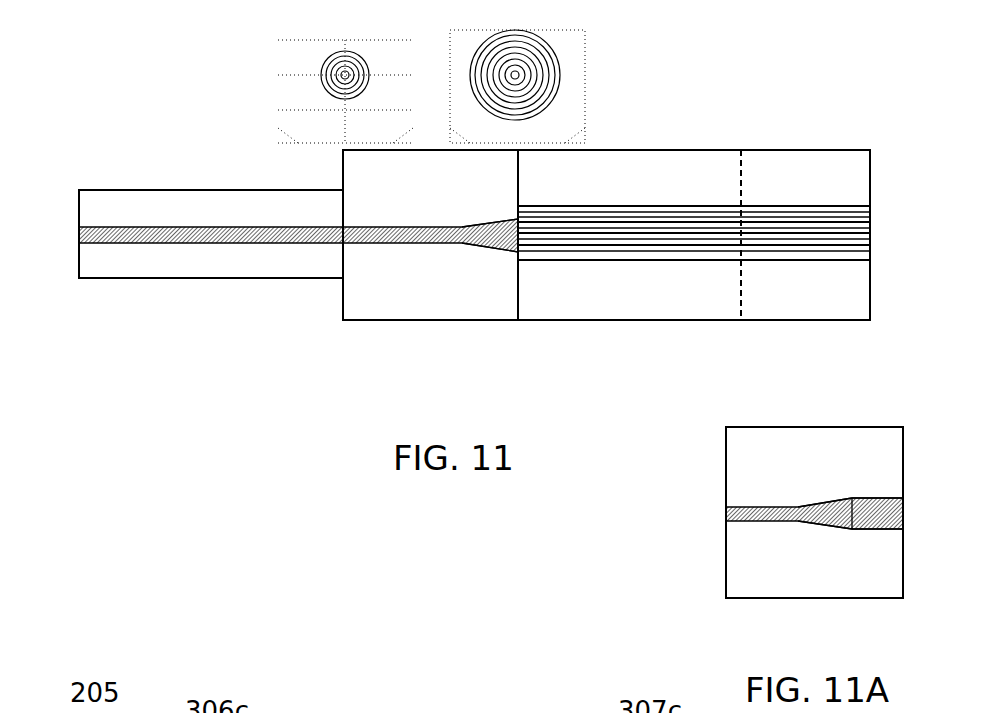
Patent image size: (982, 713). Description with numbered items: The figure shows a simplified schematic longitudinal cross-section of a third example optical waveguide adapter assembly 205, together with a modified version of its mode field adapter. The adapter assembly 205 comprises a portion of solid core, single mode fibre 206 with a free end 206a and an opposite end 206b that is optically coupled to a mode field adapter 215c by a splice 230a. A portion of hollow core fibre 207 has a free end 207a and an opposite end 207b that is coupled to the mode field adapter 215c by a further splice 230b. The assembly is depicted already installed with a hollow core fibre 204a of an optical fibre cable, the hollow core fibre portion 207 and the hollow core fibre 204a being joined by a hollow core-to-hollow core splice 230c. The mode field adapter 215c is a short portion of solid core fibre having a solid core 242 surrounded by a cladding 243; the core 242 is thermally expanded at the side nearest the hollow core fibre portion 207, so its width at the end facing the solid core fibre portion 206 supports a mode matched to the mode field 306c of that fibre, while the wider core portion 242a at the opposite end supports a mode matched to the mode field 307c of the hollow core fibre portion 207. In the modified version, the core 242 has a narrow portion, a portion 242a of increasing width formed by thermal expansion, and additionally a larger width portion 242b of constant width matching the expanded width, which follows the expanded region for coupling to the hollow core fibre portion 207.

In FIG. 11, the adapter assembly 205 is at (140, 80).
In FIG. 11, the solid core, single mode fibre 206 is at (182, 279).
In FIG. 11, the free end 206a is at (78, 279).
In FIG. 11, the opposite end 206b is at (342, 282).
In FIG. 11, the hollow core fibre 207 is at (634, 322).
In FIG. 11, the free end 207a is at (744, 322).
In FIG. 11, the opposite end 207b is at (522, 322).
In FIG. 11, the hollow core fibre 204a is at (838, 322).
In FIG. 11, the mode field adapter 215c is at (345, 322).
In FIG. 11A, the mode field adapter 215c is at (738, 600).
In FIG. 11, the splice 230a is at (342, 190).
In FIG. 11, the further splice 230b is at (518, 149).
In FIG. 11, the hollow core-to-hollow core splice 230c is at (742, 149).
In FIG. 11, the solid core 242 is at (448, 245).
In FIG. 11A, the solid core 242 is at (762, 522).
In FIG. 11, the portion of increasing width 242a is at (498, 220).
In FIG. 11A, the portion of increasing width 242a is at (838, 530).
In FIG. 11A, the larger width portion 242b is at (882, 497).
In FIG. 11, the cladding 243 is at (428, 308).
In FIG. 11, the mode field 306c is at (322, 63).
In FIG. 11, the mode field 307c is at (545, 52).